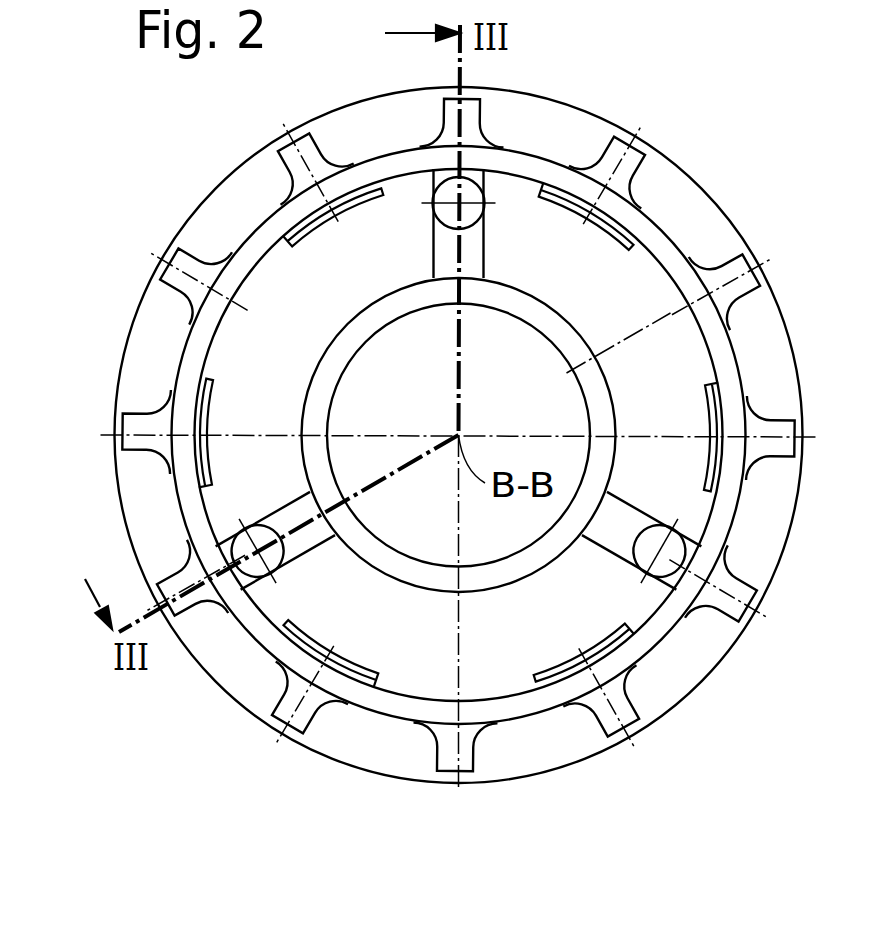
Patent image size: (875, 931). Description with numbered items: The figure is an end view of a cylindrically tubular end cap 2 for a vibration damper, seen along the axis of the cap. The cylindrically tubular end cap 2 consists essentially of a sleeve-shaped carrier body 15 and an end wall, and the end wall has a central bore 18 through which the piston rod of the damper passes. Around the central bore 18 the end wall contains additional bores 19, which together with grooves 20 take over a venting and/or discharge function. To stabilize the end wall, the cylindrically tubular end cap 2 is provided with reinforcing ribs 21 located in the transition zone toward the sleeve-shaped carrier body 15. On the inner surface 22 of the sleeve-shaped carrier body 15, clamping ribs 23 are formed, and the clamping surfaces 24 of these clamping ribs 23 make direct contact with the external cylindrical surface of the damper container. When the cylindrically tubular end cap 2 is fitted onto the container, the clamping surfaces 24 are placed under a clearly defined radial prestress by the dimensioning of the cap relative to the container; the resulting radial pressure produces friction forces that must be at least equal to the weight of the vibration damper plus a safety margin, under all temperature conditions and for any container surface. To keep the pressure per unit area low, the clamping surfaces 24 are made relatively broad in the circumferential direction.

The cylindrically tubular end cap 2 is at (664, 742).
The sleeve-shaped carrier body 15 is at (653, 635).
The central bore 18 is at (550, 381).
The additional bores 19 is at (445, 190).
The grooves 20 is at (446, 280).
The reinforcing ribs 21 is at (585, 203).
The inner surface 22 is at (212, 355).
The clamping ribs 23 is at (228, 393).
The clamping surfaces 24 is at (306, 640).